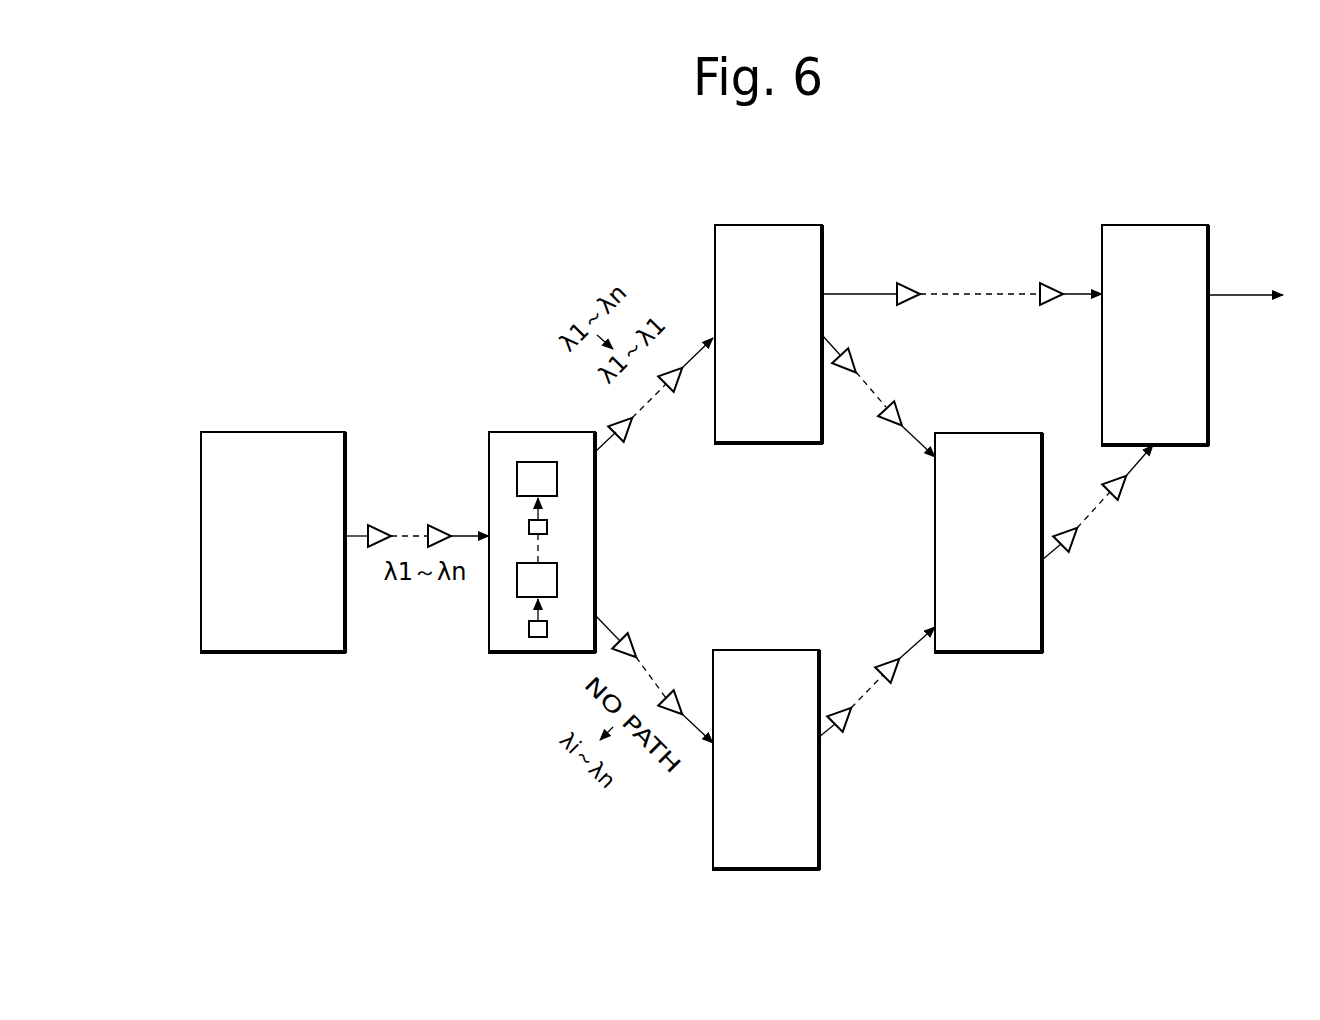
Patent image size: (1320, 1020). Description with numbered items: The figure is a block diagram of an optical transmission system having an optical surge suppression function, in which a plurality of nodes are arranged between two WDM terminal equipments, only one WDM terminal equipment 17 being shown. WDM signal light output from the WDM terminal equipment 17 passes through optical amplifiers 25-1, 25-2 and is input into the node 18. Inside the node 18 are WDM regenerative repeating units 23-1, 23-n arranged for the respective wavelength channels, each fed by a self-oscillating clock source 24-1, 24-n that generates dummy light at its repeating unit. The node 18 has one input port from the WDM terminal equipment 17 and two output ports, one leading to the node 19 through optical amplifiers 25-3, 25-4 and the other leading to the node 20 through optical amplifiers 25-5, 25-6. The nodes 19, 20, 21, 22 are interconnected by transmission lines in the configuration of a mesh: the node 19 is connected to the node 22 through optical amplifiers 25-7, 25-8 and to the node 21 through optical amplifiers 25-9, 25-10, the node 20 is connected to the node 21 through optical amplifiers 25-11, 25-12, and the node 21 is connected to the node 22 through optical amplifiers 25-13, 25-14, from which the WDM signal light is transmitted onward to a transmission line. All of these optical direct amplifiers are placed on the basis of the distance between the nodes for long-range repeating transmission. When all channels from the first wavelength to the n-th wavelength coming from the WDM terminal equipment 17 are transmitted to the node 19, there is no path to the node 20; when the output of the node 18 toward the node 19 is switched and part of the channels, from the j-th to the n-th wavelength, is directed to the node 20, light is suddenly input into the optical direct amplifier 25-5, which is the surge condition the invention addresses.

The WDM terminal equipment 17 is at (290, 432).
The node 18 is at (522, 432).
The node 19 is at (760, 225).
The node 20 is at (760, 650).
The node 21 is at (983, 433).
The node 22 is at (1126, 225).
The WDM regenerative repeating unit 23-1 is at (557, 487).
The WDM regenerative repeating unit 23-n is at (517, 583).
The self-oscillating clock source 24-1 is at (547, 527).
The self-oscillating clock source 24-n is at (538, 637).
The optical amplifier 25-1 is at (372, 524).
The optical amplifier 25-2 is at (430, 524).
The optical amplifier 25-3 is at (632, 434).
The optical amplifier 25-4 is at (682, 382).
The optical amplifier 25-5 is at (632, 634).
The optical amplifier 25-6 is at (672, 694).
The optical amplifier 25-7 is at (903, 283).
The optical amplifier 25-8 is at (1050, 283).
The optical amplifier 25-9 is at (856, 362).
The optical amplifier 25-10 is at (900, 410).
The optical amplifier 25-11 is at (850, 722).
The optical amplifier 25-12 is at (892, 658).
The optical amplifier 25-13 is at (1080, 540).
The optical amplifier 25-14 is at (1132, 487).